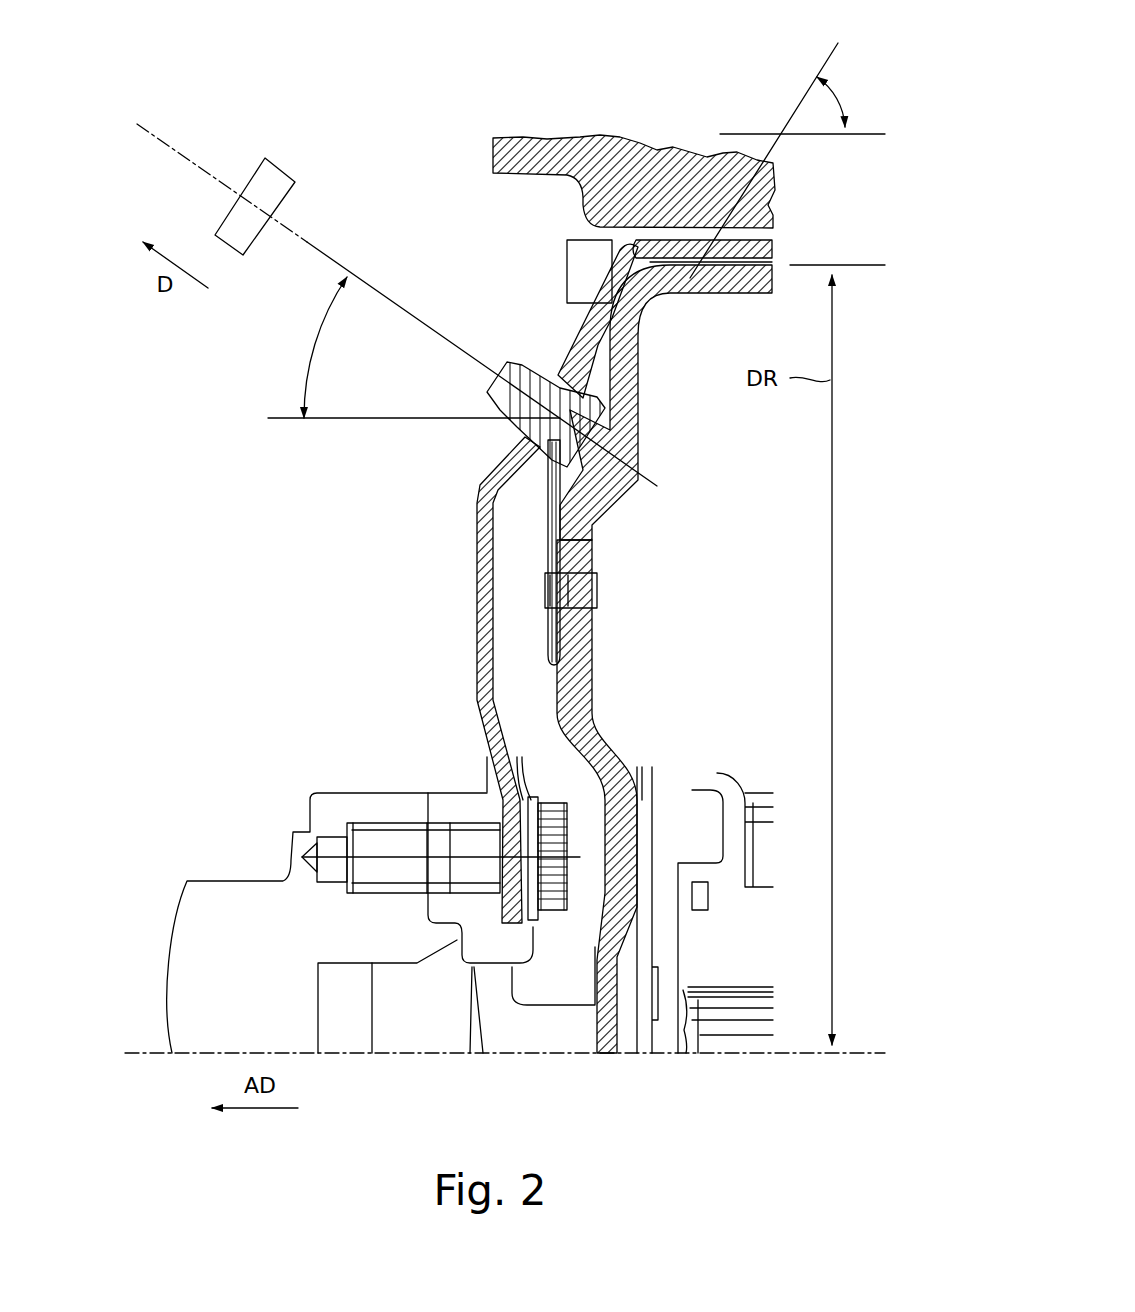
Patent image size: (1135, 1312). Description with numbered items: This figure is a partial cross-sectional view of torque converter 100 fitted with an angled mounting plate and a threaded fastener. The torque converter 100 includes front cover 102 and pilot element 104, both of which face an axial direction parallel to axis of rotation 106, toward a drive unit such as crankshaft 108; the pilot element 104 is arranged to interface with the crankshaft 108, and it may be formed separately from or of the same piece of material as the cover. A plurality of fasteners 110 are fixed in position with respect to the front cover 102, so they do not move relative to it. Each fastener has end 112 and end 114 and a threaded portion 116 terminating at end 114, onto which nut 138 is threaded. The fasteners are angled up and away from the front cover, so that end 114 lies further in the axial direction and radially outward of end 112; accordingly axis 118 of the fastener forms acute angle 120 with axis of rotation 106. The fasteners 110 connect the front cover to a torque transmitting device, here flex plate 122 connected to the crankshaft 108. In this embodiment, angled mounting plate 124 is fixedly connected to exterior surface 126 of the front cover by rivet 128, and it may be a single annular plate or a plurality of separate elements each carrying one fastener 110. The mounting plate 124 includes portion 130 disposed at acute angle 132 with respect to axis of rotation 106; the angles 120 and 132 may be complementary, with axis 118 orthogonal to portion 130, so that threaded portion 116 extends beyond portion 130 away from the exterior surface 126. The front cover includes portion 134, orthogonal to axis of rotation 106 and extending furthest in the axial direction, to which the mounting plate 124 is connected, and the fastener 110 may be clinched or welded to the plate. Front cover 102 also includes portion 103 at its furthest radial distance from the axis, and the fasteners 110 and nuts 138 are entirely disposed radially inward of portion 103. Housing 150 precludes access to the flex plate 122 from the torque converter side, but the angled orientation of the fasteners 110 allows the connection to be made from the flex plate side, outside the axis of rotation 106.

The torque converter 100 is at (697, 108).
The front cover 102 is at (640, 250).
The portion 103 is at (716, 258).
The pilot element 104 is at (548, 1055).
The axis of rotation 106 is at (735, 1055).
The crankshaft 108 is at (330, 793).
The fasteners 110 is at (592, 480).
The end 112 is at (600, 440).
The end 114 is at (510, 363).
The threaded portion 116 is at (553, 377).
The axis 118 is at (373, 290).
The acute angle 120 is at (300, 318).
The flex plate 122 is at (477, 626).
The angled mounting plate 124 is at (518, 530).
The exterior surface 126 is at (520, 683).
The rivet 128 is at (598, 596).
The portion 130 is at (583, 465).
The acute angle 132 is at (843, 100).
The portion 134 is at (592, 662).
The nut 138 is at (262, 158).
The housing 150 is at (490, 158).